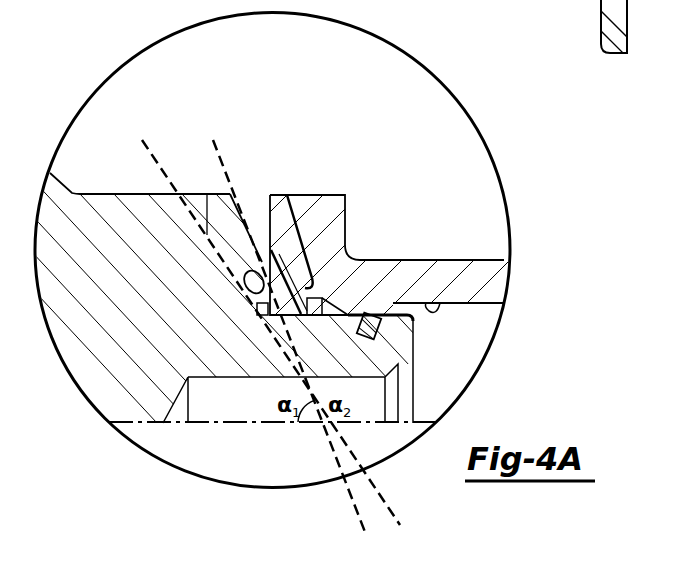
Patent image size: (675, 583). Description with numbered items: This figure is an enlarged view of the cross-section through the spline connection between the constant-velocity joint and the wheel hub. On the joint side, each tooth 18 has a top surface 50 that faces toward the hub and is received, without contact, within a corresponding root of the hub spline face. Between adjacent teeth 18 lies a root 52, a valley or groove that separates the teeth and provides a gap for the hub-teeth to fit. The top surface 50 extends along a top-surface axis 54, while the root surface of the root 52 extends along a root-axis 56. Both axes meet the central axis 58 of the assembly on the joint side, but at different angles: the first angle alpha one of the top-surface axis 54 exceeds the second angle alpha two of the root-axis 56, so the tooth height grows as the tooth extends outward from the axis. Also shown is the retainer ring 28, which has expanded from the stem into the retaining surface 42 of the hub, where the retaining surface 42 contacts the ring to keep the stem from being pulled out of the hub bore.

The teeth 18 is at (225, 222).
The retainer ring 28 is at (380, 318).
The retaining surface 42 is at (441, 303).
The top surface 50 is at (245, 203).
The root 52 is at (225, 267).
The top-surface axis 54 is at (220, 153).
The root-axis 56 is at (157, 163).
The central axis 58 is at (200, 423).